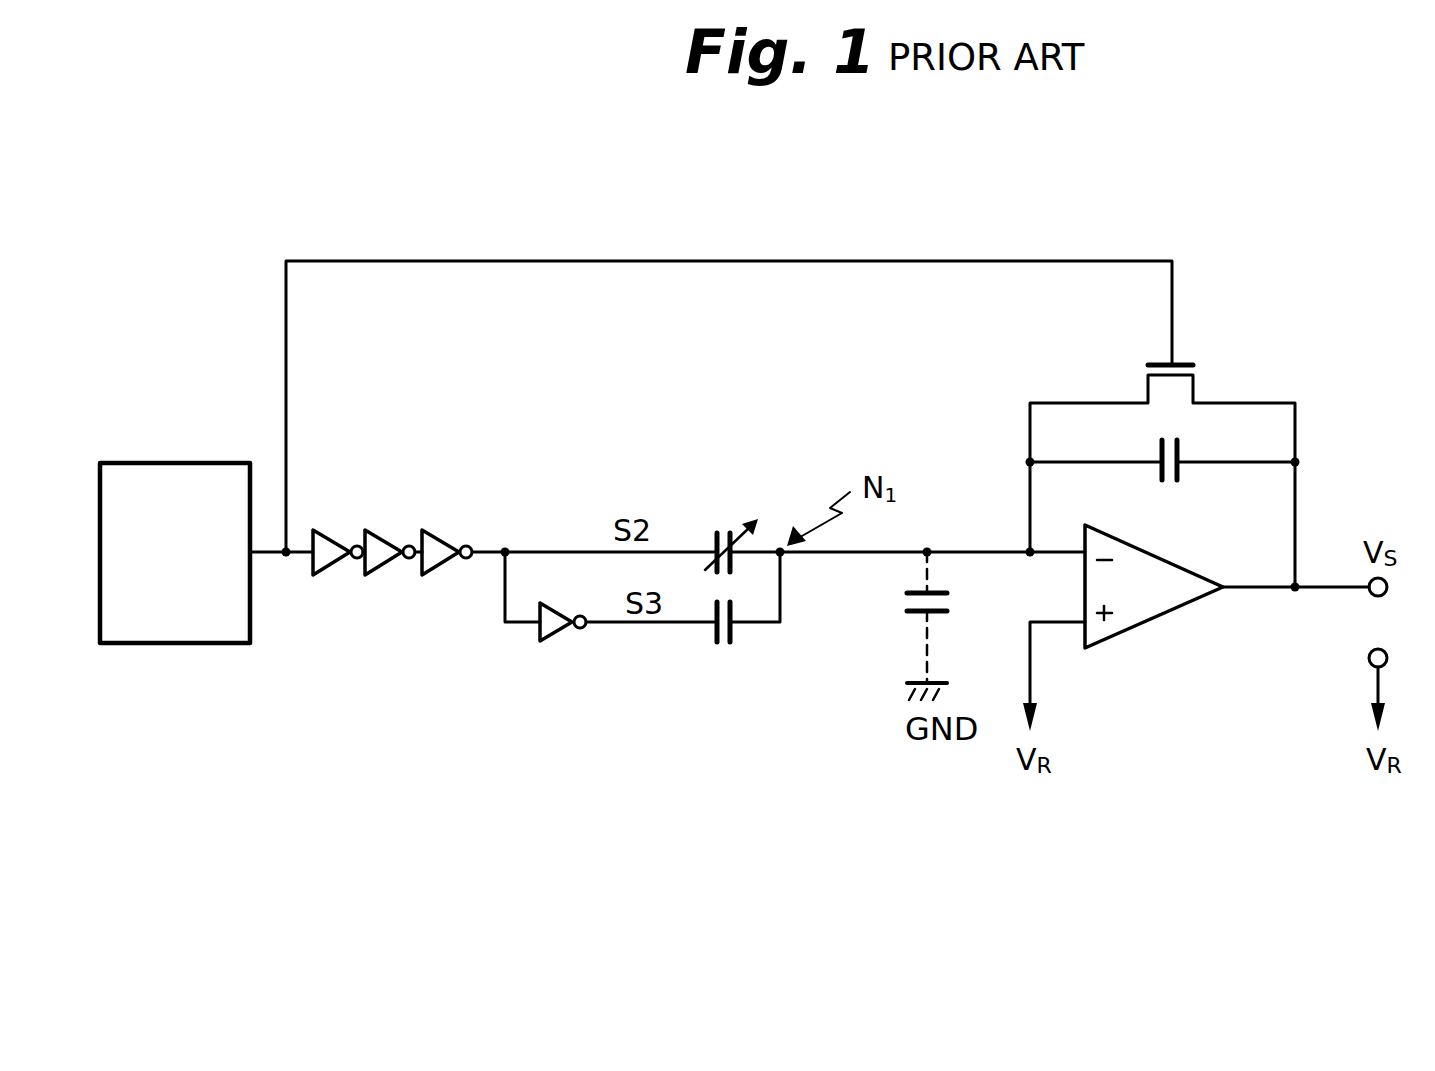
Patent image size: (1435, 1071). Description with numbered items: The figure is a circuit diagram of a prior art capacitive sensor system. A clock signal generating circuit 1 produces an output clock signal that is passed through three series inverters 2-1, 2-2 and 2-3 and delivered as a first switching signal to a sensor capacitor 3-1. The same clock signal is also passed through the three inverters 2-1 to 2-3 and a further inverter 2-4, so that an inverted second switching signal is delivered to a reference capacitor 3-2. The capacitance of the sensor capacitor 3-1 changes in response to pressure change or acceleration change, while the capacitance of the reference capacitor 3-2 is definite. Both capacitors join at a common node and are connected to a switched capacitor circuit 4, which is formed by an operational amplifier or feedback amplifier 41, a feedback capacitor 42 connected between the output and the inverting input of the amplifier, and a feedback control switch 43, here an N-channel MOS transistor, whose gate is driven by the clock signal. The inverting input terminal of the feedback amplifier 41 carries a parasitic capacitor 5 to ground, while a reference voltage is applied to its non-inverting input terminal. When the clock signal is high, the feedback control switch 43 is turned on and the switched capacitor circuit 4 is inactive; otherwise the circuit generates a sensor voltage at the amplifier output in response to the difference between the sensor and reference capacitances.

The clock signal generating circuit 1 is at (176, 463).
The inverter 2-1 is at (335, 533).
The inverter 2-2 is at (383, 533).
The inverter 2-3 is at (444, 537).
The inverter 2-4 is at (546, 645).
The sensor capacitor 3-1 is at (724, 528).
The reference capacitor 3-2 is at (721, 648).
The switched capacitor circuit 4 is at (1212, 578).
The parasitic capacitor 5 is at (898, 603).
The feedback amplifier 41 is at (1150, 620).
The feedback capacitor 42 is at (1188, 452).
The feedback control switch 43 is at (1185, 356).